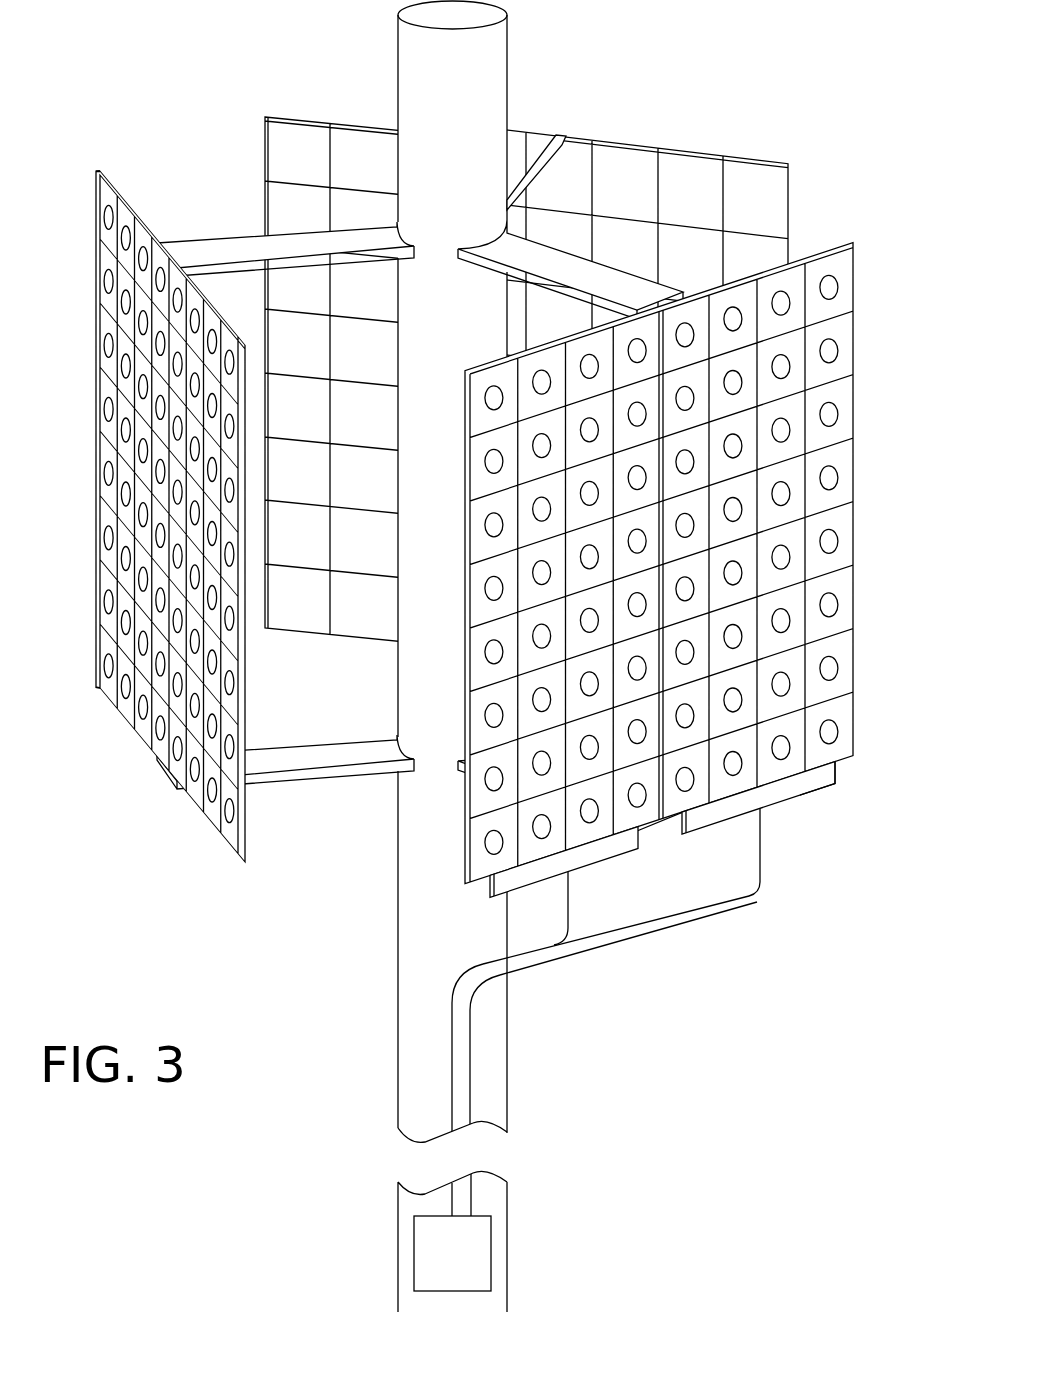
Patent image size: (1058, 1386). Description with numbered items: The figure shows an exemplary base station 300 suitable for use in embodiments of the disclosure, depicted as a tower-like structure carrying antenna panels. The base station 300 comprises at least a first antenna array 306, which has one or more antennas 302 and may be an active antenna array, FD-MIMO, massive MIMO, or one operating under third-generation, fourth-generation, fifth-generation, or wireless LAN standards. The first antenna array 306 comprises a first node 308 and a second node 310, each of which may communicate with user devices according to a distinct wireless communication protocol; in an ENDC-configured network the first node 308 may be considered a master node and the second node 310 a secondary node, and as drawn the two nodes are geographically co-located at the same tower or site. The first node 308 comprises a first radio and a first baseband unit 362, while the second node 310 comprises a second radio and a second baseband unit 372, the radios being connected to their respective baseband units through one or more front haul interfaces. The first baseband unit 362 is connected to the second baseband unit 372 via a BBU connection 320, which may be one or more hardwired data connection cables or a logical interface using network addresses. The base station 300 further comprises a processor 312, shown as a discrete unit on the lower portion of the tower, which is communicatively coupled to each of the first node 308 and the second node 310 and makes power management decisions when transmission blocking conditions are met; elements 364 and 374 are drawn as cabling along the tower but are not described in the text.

The base station 300 is at (766, 92).
The antennas 302 is at (660, 594).
The first antenna array 306 is at (654, 969).
The first node 308 is at (626, 962).
The second node 310 is at (794, 831).
The processor 312 is at (414, 1263).
The BBU connection 320 is at (661, 829).
The first baseband unit 362 is at (614, 866).
The cable 364 is at (458, 991).
The second baseband unit 372 is at (807, 798).
The cable 374 is at (694, 920).